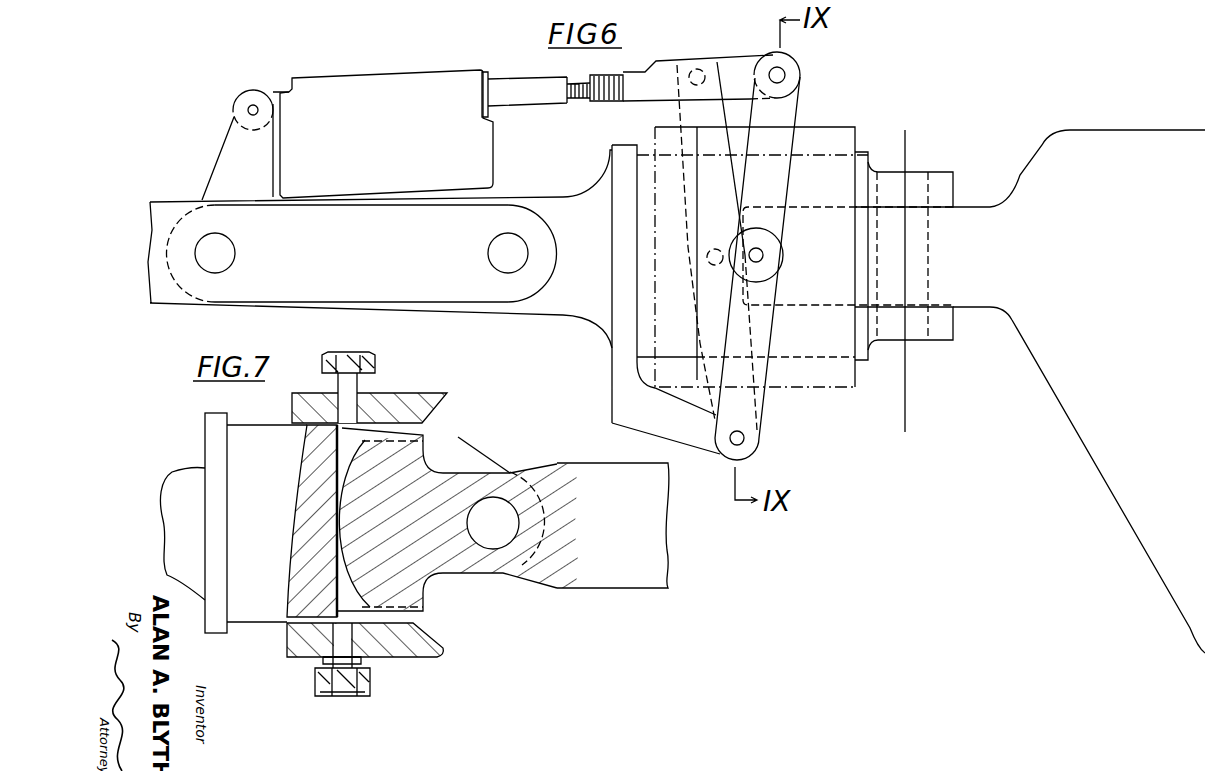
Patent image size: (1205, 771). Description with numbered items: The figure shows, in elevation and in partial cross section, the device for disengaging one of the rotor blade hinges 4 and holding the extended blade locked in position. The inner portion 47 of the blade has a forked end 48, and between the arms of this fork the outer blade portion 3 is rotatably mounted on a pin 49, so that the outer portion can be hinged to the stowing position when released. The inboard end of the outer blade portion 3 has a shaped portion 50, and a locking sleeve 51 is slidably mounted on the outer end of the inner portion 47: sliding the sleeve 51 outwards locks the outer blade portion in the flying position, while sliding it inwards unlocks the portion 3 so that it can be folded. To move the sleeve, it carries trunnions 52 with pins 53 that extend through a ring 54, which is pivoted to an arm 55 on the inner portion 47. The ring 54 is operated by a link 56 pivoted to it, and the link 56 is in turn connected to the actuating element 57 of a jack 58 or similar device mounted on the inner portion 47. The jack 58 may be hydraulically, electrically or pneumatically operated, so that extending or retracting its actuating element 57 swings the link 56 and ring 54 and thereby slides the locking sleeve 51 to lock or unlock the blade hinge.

In FIG. 6, the outer blade portion 3 is at (1072, 428).
In FIG. 7, the outer blade portion 3 is at (610, 568).
In FIG. 6, the blade hinge 4 is at (905, 428).
In FIG. 7, the blade hinge 4 is at (501, 517).
In FIG. 6, the inner portion of the blade 47 is at (562, 300).
In FIG. 7, the inner portion of the blade 47 is at (257, 613).
In FIG. 6, the forked end 48 is at (943, 183).
In FIG. 7, the forked end 48 is at (467, 590).
In FIG. 6, the pin 49 is at (905, 280).
In FIG. 6, the shaped portion 50 is at (867, 287).
In FIG. 7, the shaped portion 50 is at (423, 435).
In FIG. 6, the locking sleeve 51 is at (807, 133).
In FIG. 7, the locking sleeve 51 is at (402, 403).
In FIG. 7, the trunnion 52 is at (323, 659).
In FIG. 6, the pin 53 is at (764, 257).
In FIG. 7, the pin 53 is at (357, 663).
In FIG. 6, the ring 54 is at (762, 418).
In FIG. 7, the ring 54 is at (368, 692).
In FIG. 6, the arm 55 is at (637, 423).
In FIG. 6, the link 56 is at (740, 68).
In FIG. 6, the actuating element 57 is at (507, 88).
In FIG. 6, the jack 58 is at (455, 82).